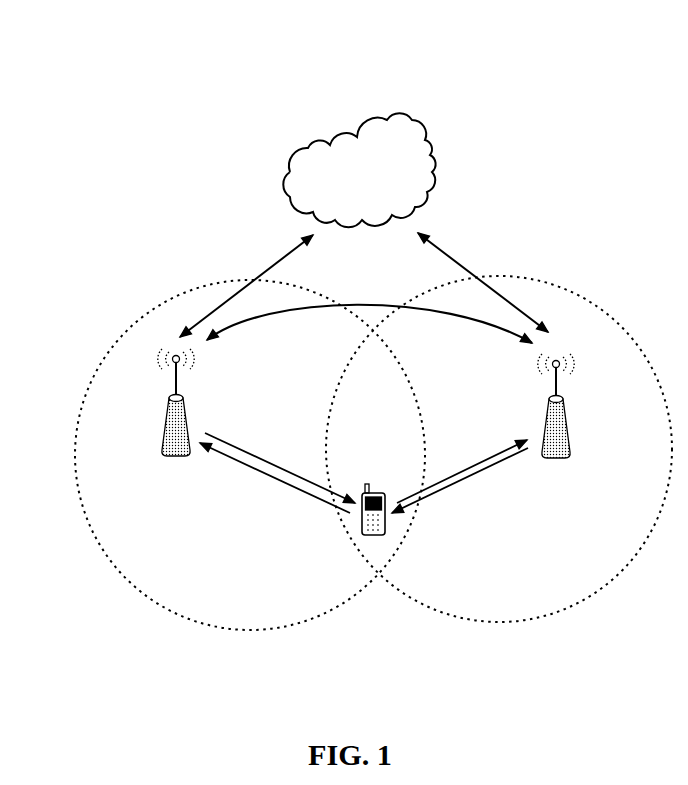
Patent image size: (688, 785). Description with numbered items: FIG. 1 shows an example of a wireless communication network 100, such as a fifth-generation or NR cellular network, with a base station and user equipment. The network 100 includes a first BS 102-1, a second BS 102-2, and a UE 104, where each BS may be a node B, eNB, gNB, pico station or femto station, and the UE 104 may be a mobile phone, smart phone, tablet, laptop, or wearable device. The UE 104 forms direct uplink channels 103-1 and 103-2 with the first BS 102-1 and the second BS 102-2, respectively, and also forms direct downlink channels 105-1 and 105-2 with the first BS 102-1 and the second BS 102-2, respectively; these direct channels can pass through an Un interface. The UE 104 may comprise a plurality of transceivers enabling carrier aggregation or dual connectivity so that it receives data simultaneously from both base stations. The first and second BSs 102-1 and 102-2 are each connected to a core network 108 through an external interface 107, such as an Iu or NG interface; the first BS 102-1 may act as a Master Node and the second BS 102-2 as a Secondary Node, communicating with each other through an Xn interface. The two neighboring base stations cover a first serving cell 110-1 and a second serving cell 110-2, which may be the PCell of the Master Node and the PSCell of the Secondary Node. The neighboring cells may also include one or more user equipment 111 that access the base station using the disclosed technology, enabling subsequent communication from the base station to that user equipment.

The wireless communication network 100 is at (50, 92).
The first base station 102-1 is at (197, 392).
The second base station 102-2 is at (566, 392).
The uplink channel 103-1 is at (278, 487).
The uplink channel 103-2 is at (450, 492).
The user equipment 104 is at (368, 482).
The downlink channel 105-1 is at (252, 452).
The downlink channel 105-2 is at (497, 448).
The external interface 107 is at (258, 272).
The core network 108 is at (312, 148).
The first serving cell 110-1 is at (197, 622).
The second serving cell 110-2 is at (472, 625).
The user equipment 111 is at (385, 305).